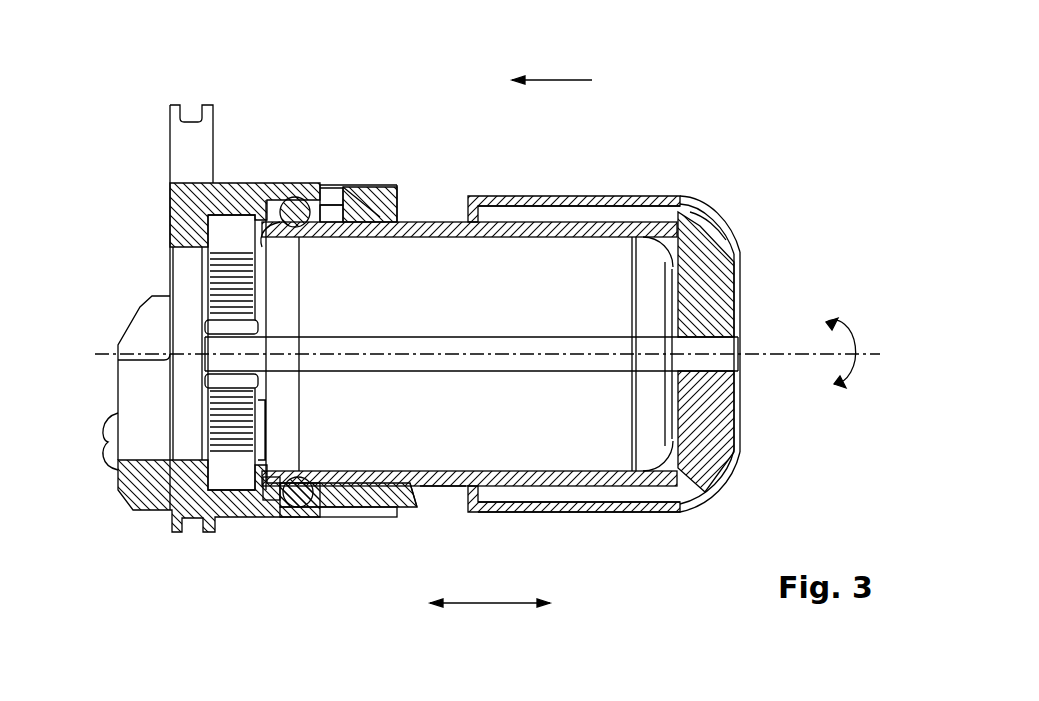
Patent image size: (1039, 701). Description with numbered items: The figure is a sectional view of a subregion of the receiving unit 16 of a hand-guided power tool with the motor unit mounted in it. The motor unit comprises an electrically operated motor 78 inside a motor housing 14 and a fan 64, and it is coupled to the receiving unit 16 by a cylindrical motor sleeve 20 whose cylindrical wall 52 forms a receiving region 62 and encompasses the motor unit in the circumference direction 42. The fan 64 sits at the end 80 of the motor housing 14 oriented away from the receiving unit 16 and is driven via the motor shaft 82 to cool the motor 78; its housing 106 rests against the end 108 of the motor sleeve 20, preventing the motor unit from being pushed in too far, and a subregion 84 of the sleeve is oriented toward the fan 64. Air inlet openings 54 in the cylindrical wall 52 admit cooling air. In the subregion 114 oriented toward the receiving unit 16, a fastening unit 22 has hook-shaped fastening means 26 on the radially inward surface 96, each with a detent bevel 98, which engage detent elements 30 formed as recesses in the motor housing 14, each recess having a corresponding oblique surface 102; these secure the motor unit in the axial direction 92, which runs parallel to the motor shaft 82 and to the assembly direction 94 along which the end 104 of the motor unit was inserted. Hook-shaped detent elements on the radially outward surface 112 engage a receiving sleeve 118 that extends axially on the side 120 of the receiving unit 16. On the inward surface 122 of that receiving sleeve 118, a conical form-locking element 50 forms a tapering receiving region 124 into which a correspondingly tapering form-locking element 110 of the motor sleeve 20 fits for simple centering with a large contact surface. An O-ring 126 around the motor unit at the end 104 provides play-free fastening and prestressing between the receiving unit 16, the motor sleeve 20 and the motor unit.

The motor housing 14 is at (452, 222).
The receiving unit 16 is at (205, 130).
The motor sleeve 20 is at (508, 196).
The fastening unit 22 is at (408, 218).
The fastening means 26 is at (348, 205).
The detent elements 30 is at (330, 205).
The circumference direction 42 is at (858, 377).
The form-locking element 50 is at (383, 506).
The cylindrical wall 52 is at (520, 509).
The air inlet openings 54 is at (441, 494).
The receiving region 62 is at (670, 197).
The fan 64 is at (742, 261).
The electrically operated motor 78 is at (603, 250).
The end 80 is at (690, 441).
The motor shaft 82 is at (722, 363).
The subregion 84 is at (643, 509).
The axial direction 92 is at (492, 603).
The assembly direction 94 is at (548, 80).
The surface 96 is at (548, 206).
The detent bevel 98 is at (365, 200).
The oblique surface 102 is at (397, 208).
The end 104 is at (243, 452).
The housing 106 is at (723, 237).
The end 108 is at (682, 511).
The form-locking element 110 is at (404, 488).
The surface 112 is at (575, 508).
The subregion 114 is at (374, 182).
The receiving sleeve 118 is at (257, 519).
The side 120 is at (213, 158).
The surface 122 is at (342, 513).
The receiving region 124 is at (320, 517).
The O-ring 126 is at (290, 517).